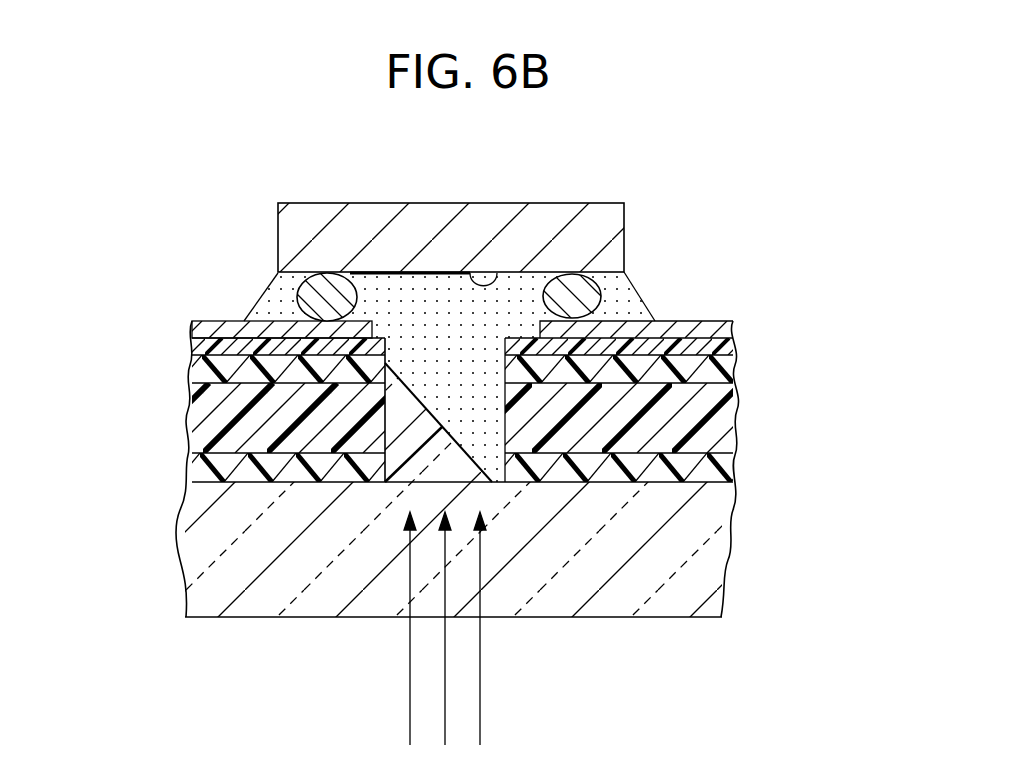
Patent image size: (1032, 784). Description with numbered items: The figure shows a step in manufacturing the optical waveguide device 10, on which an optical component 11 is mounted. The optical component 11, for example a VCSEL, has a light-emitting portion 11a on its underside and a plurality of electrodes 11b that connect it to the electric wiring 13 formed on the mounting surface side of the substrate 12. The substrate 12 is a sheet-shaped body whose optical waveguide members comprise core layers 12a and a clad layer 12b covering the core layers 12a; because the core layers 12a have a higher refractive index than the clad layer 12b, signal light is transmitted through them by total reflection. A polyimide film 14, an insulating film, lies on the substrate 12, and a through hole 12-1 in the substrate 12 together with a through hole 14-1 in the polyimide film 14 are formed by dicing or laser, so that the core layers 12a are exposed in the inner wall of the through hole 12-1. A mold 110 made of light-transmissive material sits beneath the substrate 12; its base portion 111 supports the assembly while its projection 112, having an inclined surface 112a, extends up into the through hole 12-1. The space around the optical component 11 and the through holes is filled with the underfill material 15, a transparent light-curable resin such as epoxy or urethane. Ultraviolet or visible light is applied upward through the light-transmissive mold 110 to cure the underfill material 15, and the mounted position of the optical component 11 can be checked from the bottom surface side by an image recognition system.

The optical waveguide device 10 is at (160, 445).
The optical component 11 is at (625, 220).
The light-emitting portion 11a is at (498, 274).
The electrodes 11b is at (300, 292).
The substrate 12 is at (857, 363).
The core layers 12a is at (697, 448).
The clad layer 12b is at (690, 455).
The through hole 12-1 is at (392, 441).
The electric wiring 13 is at (190, 321).
The polyimide film 14 is at (182, 348).
The through hole 14-1 is at (505, 342).
The underfill material 15 is at (270, 273).
The mold 110 is at (162, 562).
The base portion 111 is at (668, 603).
The projection 112 is at (393, 420).
The inclined surface 112a is at (451, 426).